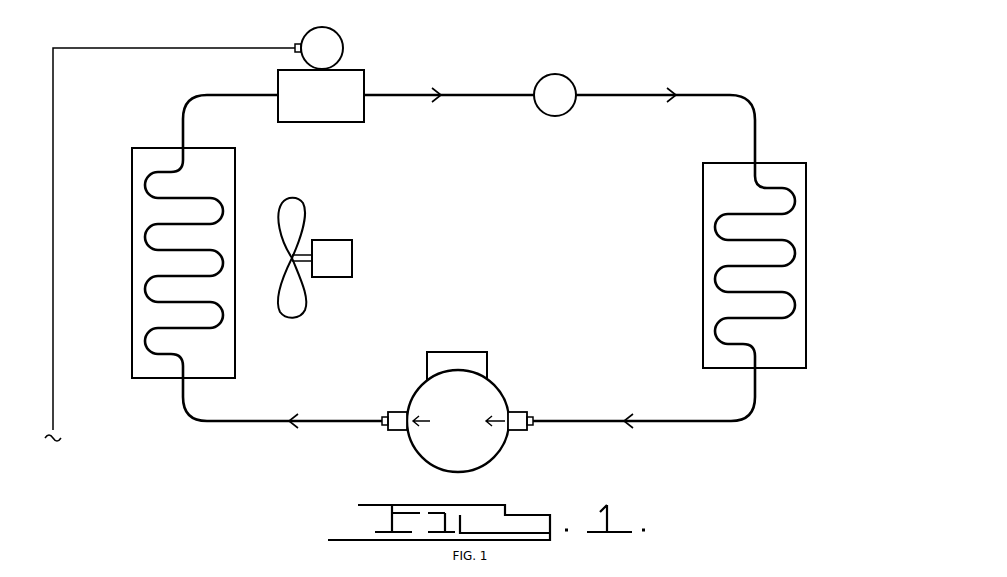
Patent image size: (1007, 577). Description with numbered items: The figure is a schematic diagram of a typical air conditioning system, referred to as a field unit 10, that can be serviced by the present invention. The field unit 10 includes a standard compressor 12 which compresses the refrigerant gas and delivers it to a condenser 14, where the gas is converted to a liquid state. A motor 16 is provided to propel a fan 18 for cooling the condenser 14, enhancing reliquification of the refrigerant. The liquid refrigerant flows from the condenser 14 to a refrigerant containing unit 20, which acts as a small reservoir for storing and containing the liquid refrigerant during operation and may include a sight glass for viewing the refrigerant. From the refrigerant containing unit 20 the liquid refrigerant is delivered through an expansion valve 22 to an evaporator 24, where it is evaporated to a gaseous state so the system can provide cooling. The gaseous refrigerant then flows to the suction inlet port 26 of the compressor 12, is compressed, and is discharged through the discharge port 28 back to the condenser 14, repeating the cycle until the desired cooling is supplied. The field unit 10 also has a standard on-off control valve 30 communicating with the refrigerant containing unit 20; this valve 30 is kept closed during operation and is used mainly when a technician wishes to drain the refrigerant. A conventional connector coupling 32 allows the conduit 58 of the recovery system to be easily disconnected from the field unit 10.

The field unit 10 is at (757, 79).
The compressor 12 is at (493, 393).
The condenser 14 is at (140, 373).
The motor 16 is at (348, 253).
The fan 18 is at (293, 212).
The refrigerant containing unit 20 is at (362, 90).
The expansion valve 22 is at (569, 79).
The evaporator 24 is at (807, 168).
The suction inlet port 26 is at (521, 430).
The discharge port 28 is at (397, 412).
The on-off control valve 30 is at (340, 40).
The connector coupling 32 is at (296, 44).
The conduit 58 is at (55, 153).